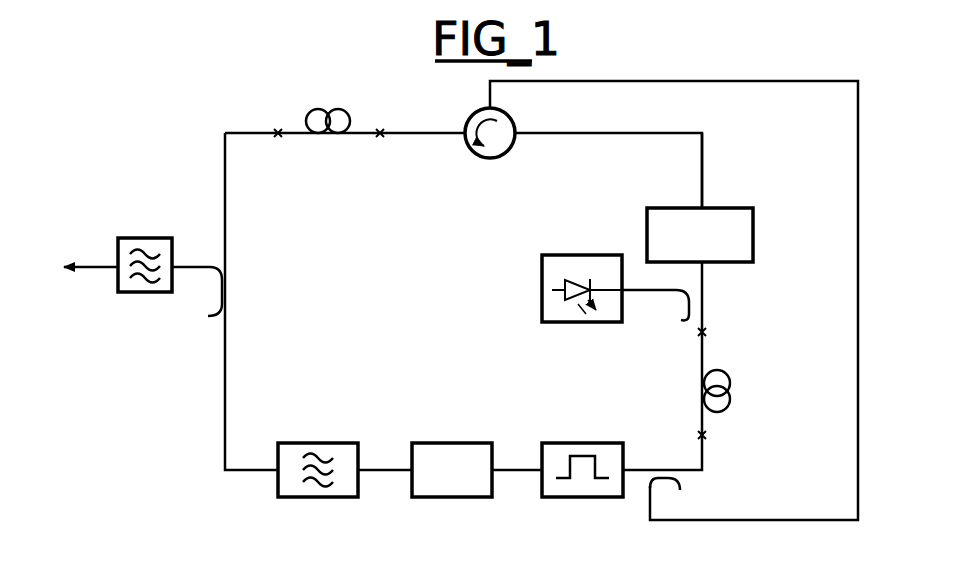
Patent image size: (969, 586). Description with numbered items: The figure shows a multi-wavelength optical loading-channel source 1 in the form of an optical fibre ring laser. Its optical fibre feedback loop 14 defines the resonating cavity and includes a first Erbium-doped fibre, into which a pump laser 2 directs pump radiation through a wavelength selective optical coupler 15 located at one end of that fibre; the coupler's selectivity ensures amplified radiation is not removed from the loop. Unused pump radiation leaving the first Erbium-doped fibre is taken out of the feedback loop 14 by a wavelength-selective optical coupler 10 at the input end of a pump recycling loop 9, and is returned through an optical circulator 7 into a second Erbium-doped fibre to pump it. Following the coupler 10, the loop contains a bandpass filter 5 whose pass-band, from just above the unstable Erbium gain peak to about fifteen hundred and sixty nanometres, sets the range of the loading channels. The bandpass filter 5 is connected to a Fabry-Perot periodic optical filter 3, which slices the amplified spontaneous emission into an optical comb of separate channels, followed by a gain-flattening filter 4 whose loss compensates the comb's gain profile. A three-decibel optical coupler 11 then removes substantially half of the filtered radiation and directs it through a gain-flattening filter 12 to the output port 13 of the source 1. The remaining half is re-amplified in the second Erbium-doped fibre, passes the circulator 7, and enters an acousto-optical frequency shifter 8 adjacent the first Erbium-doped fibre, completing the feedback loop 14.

The multi-wavelength optical loading-channel source 1 is at (380, 270).
The pump laser 2 is at (536, 302).
The Fabry-Perot periodic optical filter 3 is at (452, 440).
The gain-flattening filter 4 is at (322, 440).
The bandpass filter 5 is at (584, 441).
The optical circulator 7 is at (491, 162).
The acousto-optical frequency shifter 8 is at (757, 226).
The pump recycling loop 9 is at (755, 520).
The wavelength-selective optical coupler 10 is at (684, 492).
The 3 dB optical coupler 11 is at (206, 320).
The gain-flattening filter 12 is at (149, 236).
The output port 13 is at (85, 276).
The optical fibre feedback loop 14 is at (703, 150).
The wavelength selective optical coupler 15 is at (672, 313).